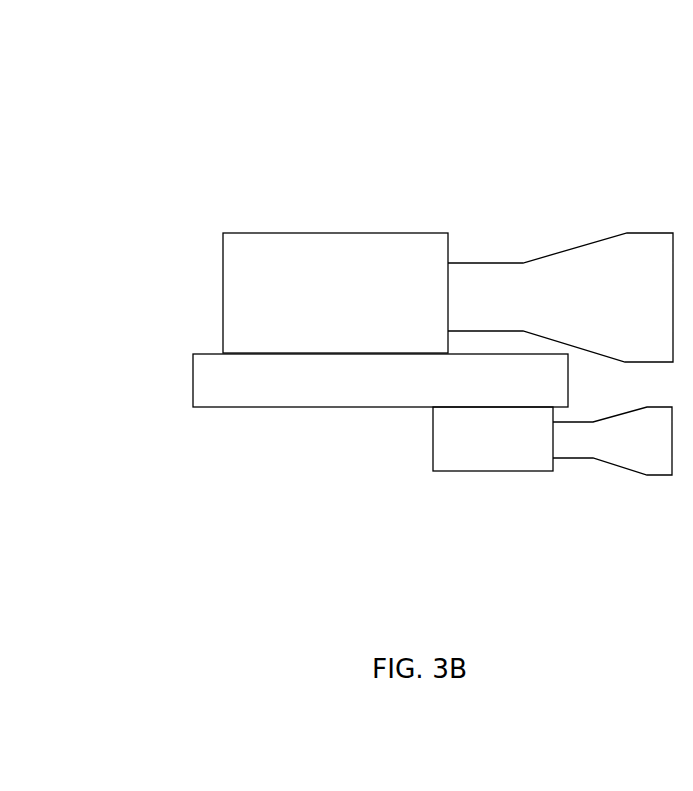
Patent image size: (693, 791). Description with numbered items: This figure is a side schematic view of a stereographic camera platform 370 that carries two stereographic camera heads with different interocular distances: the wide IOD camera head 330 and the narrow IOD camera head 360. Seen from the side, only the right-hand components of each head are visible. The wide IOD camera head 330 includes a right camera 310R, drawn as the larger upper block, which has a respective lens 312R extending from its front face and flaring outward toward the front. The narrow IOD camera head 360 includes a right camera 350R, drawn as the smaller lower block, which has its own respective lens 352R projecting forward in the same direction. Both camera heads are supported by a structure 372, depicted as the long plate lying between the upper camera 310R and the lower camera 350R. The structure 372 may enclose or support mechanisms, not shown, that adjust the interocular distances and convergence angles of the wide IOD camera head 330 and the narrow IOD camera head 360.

The stereographic camera platform 370 is at (183, 87).
The wide IOD camera head 330 is at (369, 177).
The right camera 310R is at (288, 233).
The lens 312R is at (597, 242).
The structure 372 is at (192, 385).
The right camera 350R is at (470, 471).
The lens 352R is at (628, 470).
The narrow IOD camera head 360 is at (453, 539).